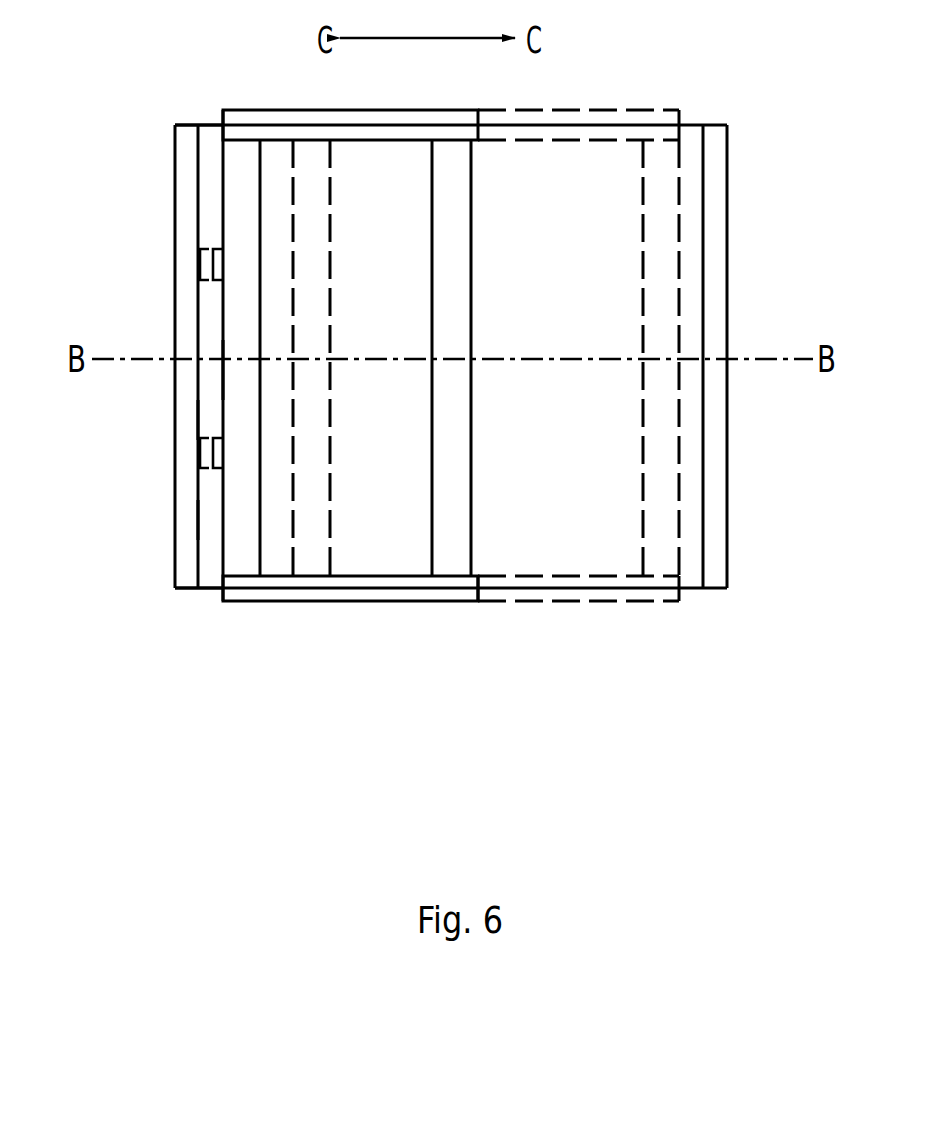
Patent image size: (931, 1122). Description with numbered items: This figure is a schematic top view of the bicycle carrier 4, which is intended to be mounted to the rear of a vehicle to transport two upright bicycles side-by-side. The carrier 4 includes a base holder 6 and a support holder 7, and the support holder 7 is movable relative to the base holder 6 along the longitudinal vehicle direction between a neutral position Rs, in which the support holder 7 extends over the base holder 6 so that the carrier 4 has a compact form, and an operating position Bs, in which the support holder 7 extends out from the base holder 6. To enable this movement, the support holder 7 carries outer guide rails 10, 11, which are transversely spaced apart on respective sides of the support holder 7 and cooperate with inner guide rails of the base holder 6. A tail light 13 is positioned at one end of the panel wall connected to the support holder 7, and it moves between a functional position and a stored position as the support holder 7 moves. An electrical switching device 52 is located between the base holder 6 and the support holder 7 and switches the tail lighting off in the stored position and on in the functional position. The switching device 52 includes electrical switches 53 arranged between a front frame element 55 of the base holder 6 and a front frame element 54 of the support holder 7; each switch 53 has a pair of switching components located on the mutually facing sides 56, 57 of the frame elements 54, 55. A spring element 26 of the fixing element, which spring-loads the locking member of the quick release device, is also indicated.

The bicycle carrier 4 is at (340, 607).
The base holder 6 is at (178, 598).
The support holder 7 is at (437, 605).
The outer guide rail 10 is at (243, 110).
The outer guide rail 11 is at (273, 603).
The tail light 13 is at (717, 191).
The spring element 26 is at (205, 423).
The electrical switching device 52 is at (210, 293).
The electrical switch 53 is at (203, 268).
The front frame element of support holder 54 is at (239, 197).
The front frame element of base holder 55 is at (187, 493).
The facing side of frame element 56 is at (202, 523).
The facing side of frame element 57 is at (222, 375).
The neutral position Rs is at (462, 595).
The operating position Bs is at (562, 595).